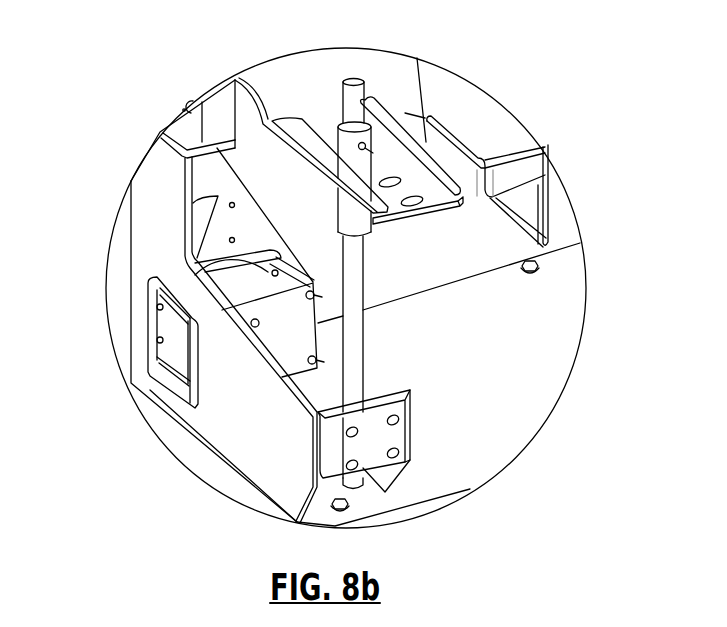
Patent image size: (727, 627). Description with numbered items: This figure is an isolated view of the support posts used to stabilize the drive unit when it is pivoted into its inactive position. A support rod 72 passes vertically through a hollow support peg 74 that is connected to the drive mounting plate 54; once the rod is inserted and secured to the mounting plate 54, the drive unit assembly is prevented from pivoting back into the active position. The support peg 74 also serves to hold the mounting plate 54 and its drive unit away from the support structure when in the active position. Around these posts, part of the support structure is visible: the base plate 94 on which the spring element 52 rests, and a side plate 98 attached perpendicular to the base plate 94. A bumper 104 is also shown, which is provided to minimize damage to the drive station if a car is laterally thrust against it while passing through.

The spring element 52 is at (172, 318).
The drive mounting plate 54 is at (292, 93).
The support rod 72 is at (365, 353).
The support peg 74 is at (370, 232).
The base plate 94 is at (455, 423).
The side plate 98 is at (232, 432).
The bumper 104 is at (335, 448).